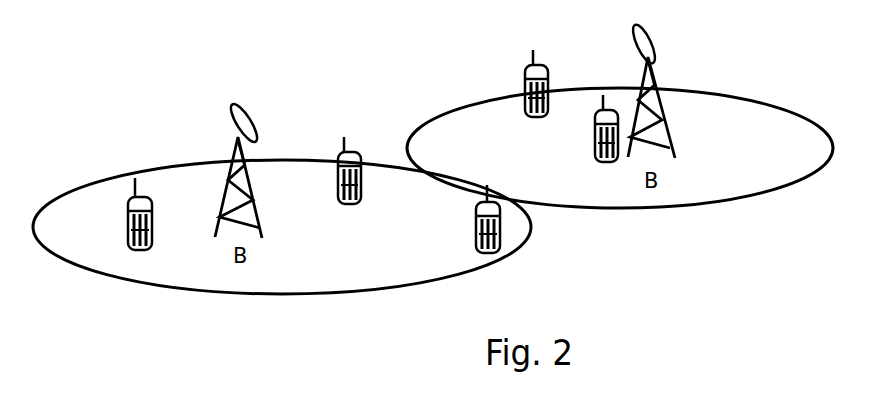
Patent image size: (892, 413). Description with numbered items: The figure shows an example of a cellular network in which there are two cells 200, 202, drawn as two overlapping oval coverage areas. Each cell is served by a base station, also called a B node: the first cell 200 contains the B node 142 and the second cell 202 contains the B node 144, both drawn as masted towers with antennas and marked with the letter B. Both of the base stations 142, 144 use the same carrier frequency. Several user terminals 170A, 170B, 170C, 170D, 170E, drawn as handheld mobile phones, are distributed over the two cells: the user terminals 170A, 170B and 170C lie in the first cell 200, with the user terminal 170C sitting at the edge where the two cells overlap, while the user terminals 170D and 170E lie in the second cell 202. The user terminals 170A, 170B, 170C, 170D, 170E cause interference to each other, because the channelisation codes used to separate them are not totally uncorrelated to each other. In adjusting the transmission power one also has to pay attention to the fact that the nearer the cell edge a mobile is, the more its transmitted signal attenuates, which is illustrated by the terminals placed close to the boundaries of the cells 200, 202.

The cell 200 is at (120, 280).
The cell 202 is at (735, 197).
The B node 142 is at (223, 185).
The B node 144 is at (667, 107).
The user terminal 170A is at (123, 207).
The user terminal 170B is at (333, 195).
The user terminal 170C is at (473, 212).
The user terminal 170D is at (523, 108).
The user terminal 170E is at (595, 152).